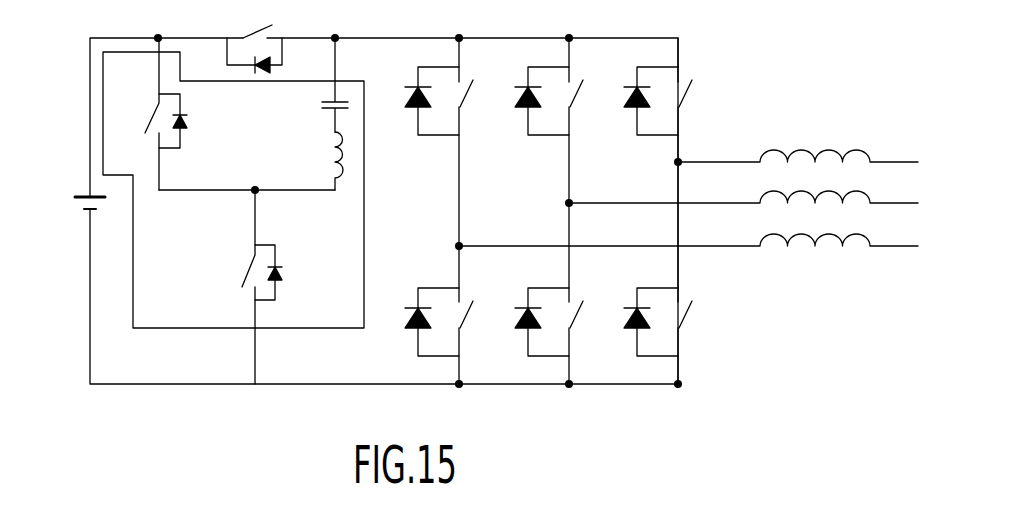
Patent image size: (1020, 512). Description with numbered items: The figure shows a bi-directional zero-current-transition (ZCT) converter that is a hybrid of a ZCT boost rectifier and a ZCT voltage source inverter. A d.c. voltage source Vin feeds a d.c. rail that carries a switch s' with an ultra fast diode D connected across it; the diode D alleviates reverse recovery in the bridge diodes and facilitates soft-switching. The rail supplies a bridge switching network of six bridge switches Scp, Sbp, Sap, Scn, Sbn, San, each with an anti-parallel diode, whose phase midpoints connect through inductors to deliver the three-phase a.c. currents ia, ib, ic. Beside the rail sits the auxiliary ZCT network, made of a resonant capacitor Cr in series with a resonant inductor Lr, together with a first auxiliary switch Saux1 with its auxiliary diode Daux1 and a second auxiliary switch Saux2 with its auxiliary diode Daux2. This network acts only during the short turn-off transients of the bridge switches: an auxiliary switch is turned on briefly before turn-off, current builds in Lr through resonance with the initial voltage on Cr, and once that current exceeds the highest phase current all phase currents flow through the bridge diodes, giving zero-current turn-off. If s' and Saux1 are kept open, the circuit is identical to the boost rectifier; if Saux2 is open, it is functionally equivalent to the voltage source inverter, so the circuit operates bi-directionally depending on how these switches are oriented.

The d.c. voltage source Vin is at (71, 197).
The switch s' is at (273, 25).
The ultra fast diode D is at (264, 59).
The auxiliary switch Saux1 is at (132, 114).
The auxiliary diode Daux1 is at (188, 139).
The auxiliary switch Saux2 is at (221, 287).
The auxiliary diode Daux2 is at (296, 278).
The resonant capacitor Cr is at (322, 85).
The resonant inductor Lr is at (323, 161).
The bridge switch Scp is at (451, 101).
The bridge switch Sbp is at (561, 101).
The bridge switch Sap is at (670, 101).
The bridge switch Scn is at (451, 322).
The bridge switch Sbn is at (561, 322).
The bridge switch San is at (670, 322).
The three-phase a.c. current ia is at (820, 143).
The three-phase a.c. current ib is at (820, 184).
The three-phase a.c. current ic is at (820, 226).